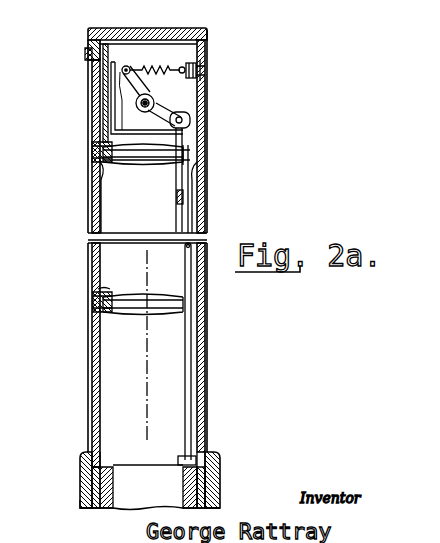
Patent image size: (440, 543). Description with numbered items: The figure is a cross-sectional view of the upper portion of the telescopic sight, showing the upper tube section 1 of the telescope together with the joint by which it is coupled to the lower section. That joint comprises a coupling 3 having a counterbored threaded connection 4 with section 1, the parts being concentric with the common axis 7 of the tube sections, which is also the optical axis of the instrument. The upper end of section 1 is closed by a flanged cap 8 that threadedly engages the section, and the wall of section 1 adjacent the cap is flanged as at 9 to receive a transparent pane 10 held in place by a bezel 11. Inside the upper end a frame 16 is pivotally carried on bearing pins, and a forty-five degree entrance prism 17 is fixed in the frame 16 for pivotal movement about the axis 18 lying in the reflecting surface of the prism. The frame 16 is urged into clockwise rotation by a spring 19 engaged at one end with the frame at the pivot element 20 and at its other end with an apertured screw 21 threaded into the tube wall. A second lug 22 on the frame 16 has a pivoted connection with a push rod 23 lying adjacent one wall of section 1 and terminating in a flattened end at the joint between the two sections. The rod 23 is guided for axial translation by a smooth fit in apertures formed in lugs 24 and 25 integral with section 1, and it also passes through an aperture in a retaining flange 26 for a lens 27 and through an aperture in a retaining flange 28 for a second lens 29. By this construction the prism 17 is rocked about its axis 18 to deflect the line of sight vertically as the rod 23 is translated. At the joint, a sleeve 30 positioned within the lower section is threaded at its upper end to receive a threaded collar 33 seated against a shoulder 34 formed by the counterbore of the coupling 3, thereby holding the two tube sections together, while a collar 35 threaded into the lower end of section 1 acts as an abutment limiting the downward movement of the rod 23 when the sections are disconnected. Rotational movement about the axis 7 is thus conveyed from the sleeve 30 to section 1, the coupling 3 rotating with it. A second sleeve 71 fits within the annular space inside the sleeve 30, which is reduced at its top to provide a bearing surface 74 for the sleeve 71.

The upper tube section 1 is at (93, 371).
The coupling 3 is at (80, 470).
The counterbored threaded connection 4 is at (213, 460).
The common axis 7 is at (149, 372).
The flanged cap 8 is at (166, 29).
The flange 9 is at (110, 63).
The transparent pane 10 is at (103, 78).
The bezel 11 is at (98, 150).
The frame 16 is at (160, 108).
The entrance prism 17 is at (113, 122).
The axis 18 is at (136, 103).
The spring 19 is at (160, 66).
The pivot 20 is at (128, 66).
The apertured screw 21 is at (203, 70).
The second lug 22 is at (190, 119).
The push rod 23 is at (186, 263).
The lug 24 is at (176, 201).
The lug 25 is at (178, 452).
The retaining flange 26 is at (171, 163).
The lens 27 is at (129, 163).
The retaining flange 28 is at (110, 313).
The second lens 29 is at (170, 313).
The sleeve 30 is at (105, 508).
The threaded collar 33 is at (212, 487).
The shoulder 34 is at (88, 506).
The collar 35 is at (101, 468).
The second sleeve 71 is at (113, 490).
The bearing surface 74 is at (205, 506).